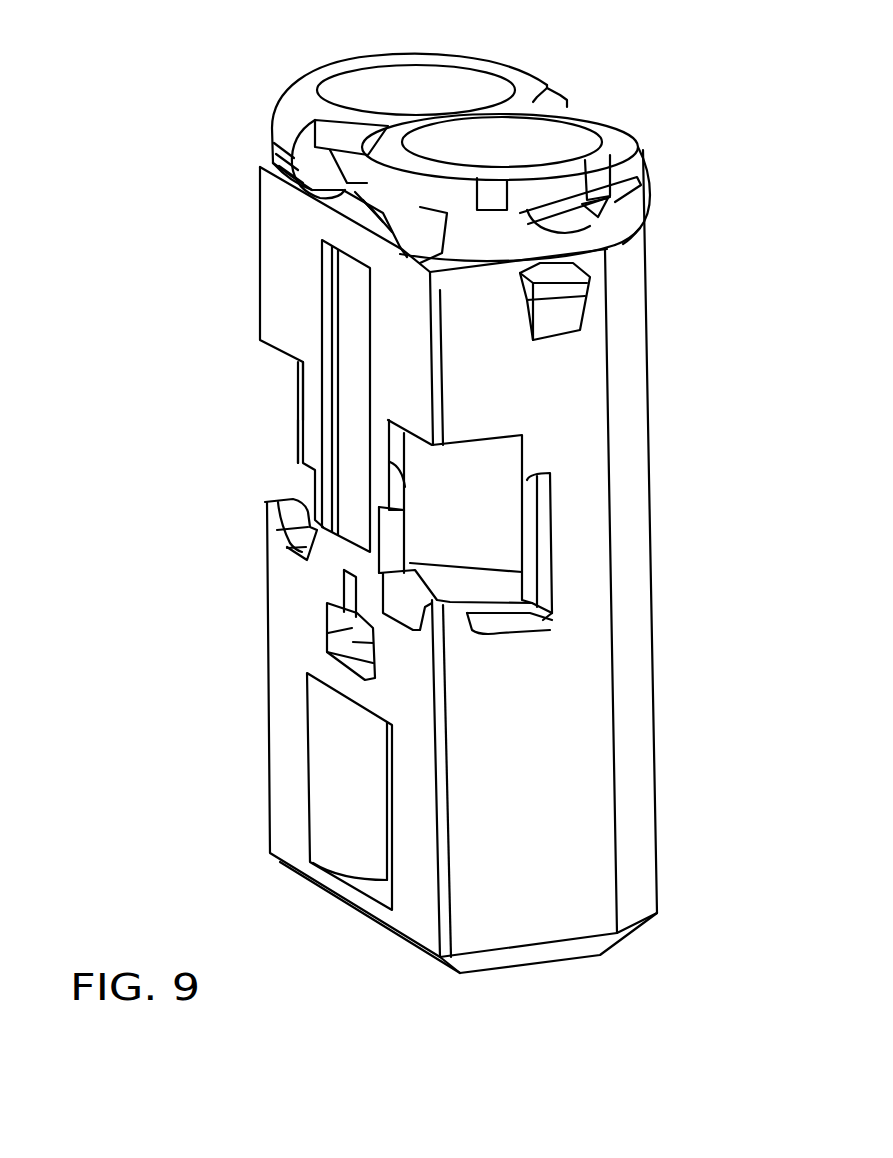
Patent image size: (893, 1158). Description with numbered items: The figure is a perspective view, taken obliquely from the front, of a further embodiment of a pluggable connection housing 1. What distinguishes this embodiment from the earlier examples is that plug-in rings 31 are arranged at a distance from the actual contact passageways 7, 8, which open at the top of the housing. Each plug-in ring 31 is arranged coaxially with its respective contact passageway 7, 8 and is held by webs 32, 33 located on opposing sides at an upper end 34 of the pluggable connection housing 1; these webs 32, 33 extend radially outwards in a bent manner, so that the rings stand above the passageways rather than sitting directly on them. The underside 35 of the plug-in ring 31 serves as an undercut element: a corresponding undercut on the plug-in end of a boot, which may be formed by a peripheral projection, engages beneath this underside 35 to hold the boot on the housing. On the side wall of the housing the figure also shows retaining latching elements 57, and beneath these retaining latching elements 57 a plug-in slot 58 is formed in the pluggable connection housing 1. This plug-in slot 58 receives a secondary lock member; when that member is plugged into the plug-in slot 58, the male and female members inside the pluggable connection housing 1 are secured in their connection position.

The pluggable connection housing 1 is at (706, 503).
The contact passageway 7 is at (499, 245).
The contact passageway 8 is at (347, 173).
The plug-in ring 31 is at (483, 133).
The web 32 is at (343, 197).
The web 33 is at (565, 98).
The upper end 34 is at (617, 235).
The underside 35 is at (617, 203).
The retaining latching element 57 is at (307, 480).
The plug-in slot 58 is at (350, 628).